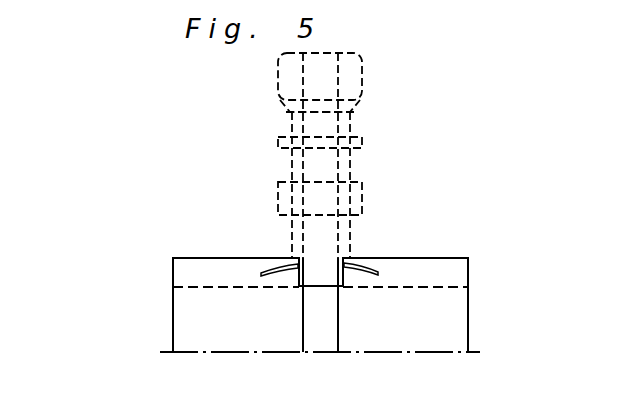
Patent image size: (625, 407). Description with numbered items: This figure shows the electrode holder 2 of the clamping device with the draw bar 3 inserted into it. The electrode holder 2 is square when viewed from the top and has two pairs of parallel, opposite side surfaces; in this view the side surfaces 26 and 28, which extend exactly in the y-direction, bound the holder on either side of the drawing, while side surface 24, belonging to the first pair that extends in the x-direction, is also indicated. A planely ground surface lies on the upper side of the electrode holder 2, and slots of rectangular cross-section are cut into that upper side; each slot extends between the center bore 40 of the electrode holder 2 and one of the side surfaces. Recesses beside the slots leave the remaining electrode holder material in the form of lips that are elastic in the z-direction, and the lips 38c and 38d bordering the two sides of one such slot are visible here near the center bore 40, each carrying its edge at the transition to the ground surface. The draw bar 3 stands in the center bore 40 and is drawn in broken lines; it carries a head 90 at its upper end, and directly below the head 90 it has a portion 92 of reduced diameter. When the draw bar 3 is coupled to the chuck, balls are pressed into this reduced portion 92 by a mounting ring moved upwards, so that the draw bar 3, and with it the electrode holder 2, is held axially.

The electrode holder 2 is at (143, 258).
The draw bar 3 is at (347, 82).
The side surface 24 is at (455, 338).
The side surface 26 is at (468, 312).
The side surface 28 is at (173, 318).
The lip 38c is at (351, 263).
The lip 38d is at (281, 263).
The center bore 40 is at (325, 287).
The head 90 is at (278, 78).
The portion of reduced diameter 92 is at (290, 123).